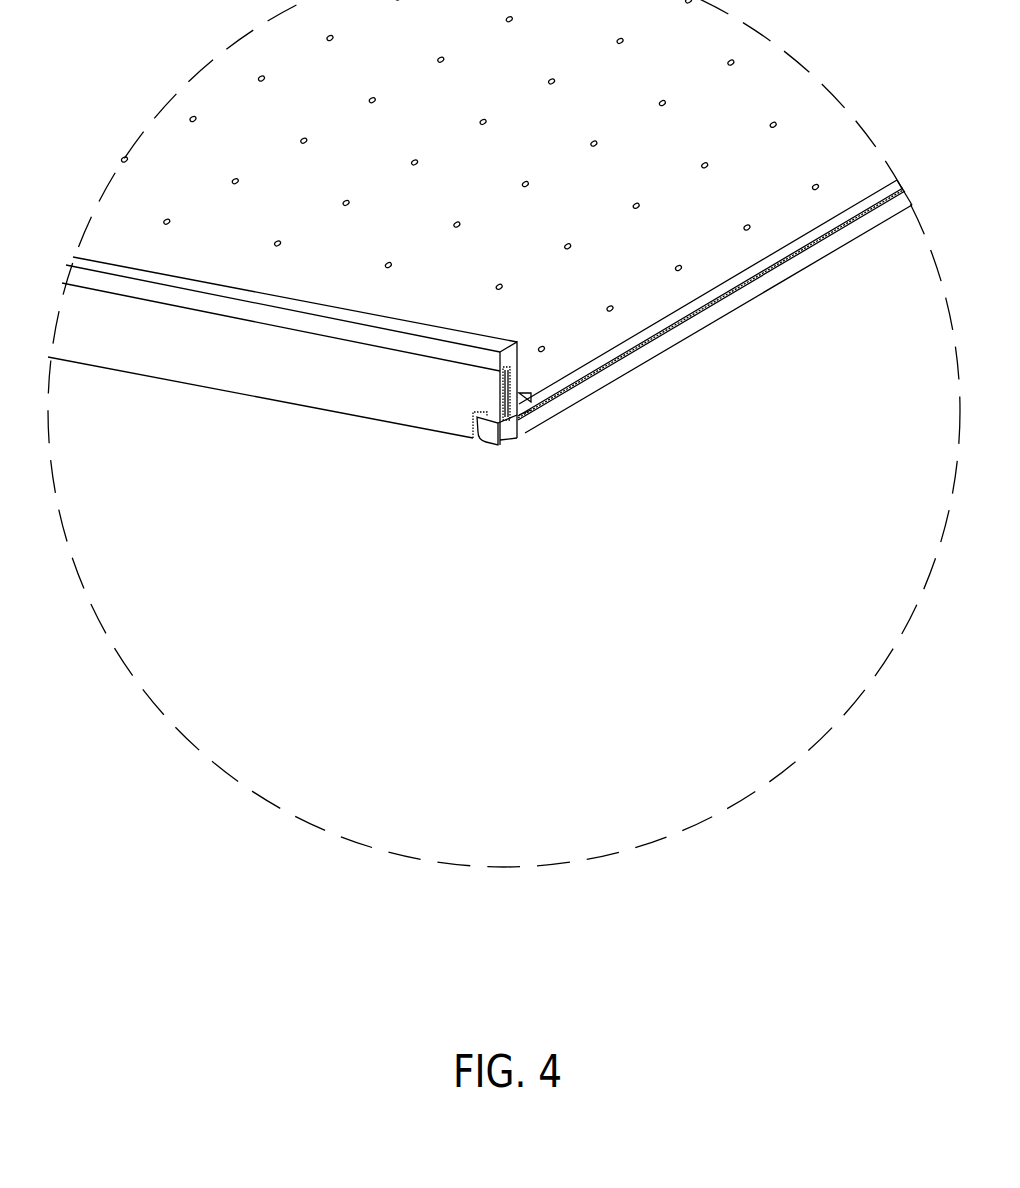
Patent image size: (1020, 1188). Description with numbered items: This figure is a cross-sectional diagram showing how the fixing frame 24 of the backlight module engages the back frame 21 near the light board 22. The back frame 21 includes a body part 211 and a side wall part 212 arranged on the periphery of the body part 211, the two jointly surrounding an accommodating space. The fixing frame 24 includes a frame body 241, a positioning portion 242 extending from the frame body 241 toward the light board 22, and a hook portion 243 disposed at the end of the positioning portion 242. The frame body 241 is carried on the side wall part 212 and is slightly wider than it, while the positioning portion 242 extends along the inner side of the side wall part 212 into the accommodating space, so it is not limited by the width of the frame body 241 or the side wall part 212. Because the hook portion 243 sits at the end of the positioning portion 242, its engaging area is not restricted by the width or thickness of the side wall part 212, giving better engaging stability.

The back frame 21 is at (747, 307).
The body part 211 is at (687, 338).
The light board 22 is at (753, 247).
The fixing frame 24 is at (425, 365).
The frame body 241 is at (520, 357).
The positioning portion 242 is at (530, 428).
The hook portion 243 is at (507, 437).
The side wall part 212 is at (235, 378).